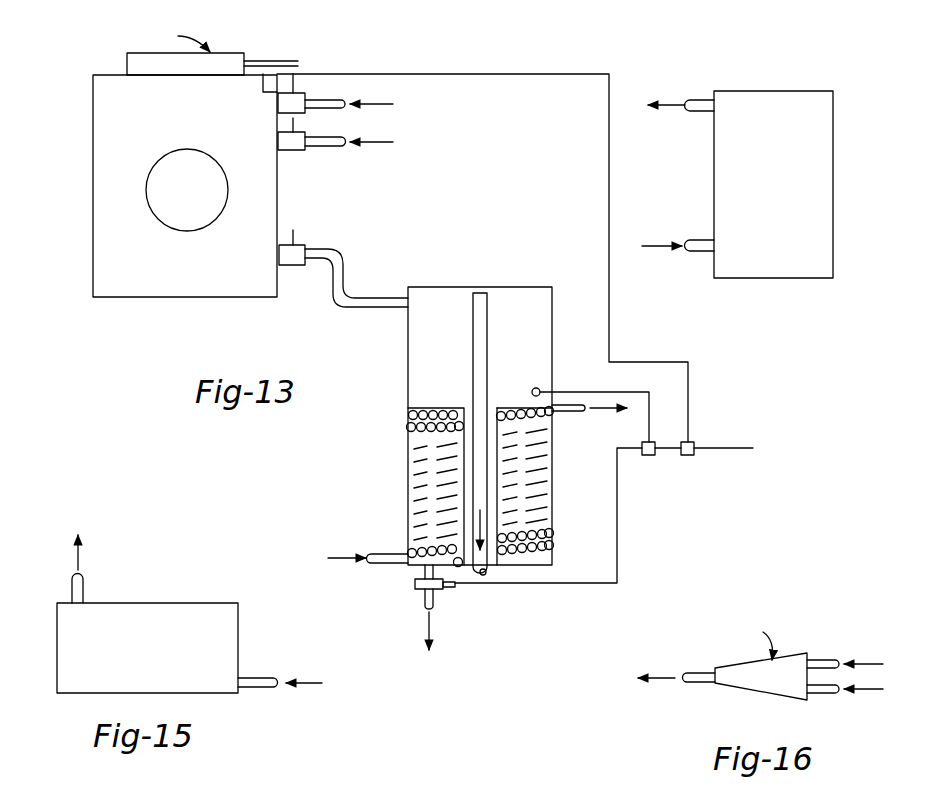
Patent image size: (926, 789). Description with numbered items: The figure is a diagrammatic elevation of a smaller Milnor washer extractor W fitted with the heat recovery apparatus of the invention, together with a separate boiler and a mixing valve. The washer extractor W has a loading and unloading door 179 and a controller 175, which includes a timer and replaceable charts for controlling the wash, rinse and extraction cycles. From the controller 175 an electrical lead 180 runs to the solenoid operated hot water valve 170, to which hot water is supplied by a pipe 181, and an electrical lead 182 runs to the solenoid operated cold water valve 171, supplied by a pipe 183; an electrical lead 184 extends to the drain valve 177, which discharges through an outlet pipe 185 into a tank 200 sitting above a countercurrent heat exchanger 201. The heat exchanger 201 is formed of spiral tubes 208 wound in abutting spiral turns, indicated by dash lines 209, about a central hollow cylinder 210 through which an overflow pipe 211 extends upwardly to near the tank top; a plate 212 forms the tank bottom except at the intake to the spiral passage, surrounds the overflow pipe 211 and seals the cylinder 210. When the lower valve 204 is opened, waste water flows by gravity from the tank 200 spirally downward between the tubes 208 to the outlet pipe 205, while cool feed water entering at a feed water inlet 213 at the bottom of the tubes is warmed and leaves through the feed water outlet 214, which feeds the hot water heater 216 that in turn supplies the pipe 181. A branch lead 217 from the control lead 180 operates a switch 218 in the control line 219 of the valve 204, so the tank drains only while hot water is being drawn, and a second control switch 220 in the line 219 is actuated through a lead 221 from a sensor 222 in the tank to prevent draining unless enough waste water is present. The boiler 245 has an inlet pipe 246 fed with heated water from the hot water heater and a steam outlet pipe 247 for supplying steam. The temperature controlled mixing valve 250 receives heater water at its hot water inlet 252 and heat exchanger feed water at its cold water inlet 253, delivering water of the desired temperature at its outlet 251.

In FIG. 13, the controller 175 is at (127, 63).
In FIG. 13, the washer extractor W is at (158, 300).
In FIG. 13, the loading and unloading door 179 is at (180, 158).
In FIG. 13, the electrical lead 180 is at (263, 90).
In FIG. 13, the hot water valve 170 is at (290, 105).
In FIG. 13, the cold water valve 171 is at (292, 140).
In FIG. 13, the pipe 181 is at (320, 104).
In FIG. 13, the electrical lead 182 is at (289, 60).
In FIG. 13, the pipe 183 is at (325, 146).
In FIG. 13, the electrical lead 184 is at (298, 68).
In FIG. 13, the outlet pipe 185 is at (350, 272).
In FIG. 13, the drain valve 177 is at (296, 265).
In FIG. 13, the tank 200 is at (408, 350).
In FIG. 13, the heat exchanger 201 is at (408, 455).
In FIG. 13, the spiral tubes 208 is at (409, 427).
In FIG. 13, the dash lines 209 is at (422, 506).
In FIG. 13, the central hollow cylinder 210 is at (502, 410).
In FIG. 13, the overflow pipe 211 is at (485, 312).
In FIG. 13, the plate 212 is at (447, 410).
In FIG. 13, the feed water inlet 213 is at (380, 563).
In FIG. 13, the feed water outlet 214 is at (575, 412).
In FIG. 13, the hot water heater 216 is at (833, 118).
In FIG. 13, the branch lead 217 is at (437, 74).
In FIG. 13, the switch 218 is at (690, 455).
In FIG. 13, the control line 219 is at (745, 448).
In FIG. 13, the second control switch 220 is at (650, 455).
In FIG. 13, the lead 221 is at (598, 392).
In FIG. 13, the sensor 222 is at (538, 388).
In FIG. 13, the valve 204 is at (416, 586).
In FIG. 13, the outlet pipe 205 is at (434, 597).
In FIG. 15, the boiler 245 is at (238, 636).
In FIG. 15, the inlet pipe 246 is at (262, 688).
In FIG. 15, the steam outlet pipe 247 is at (83, 585).
In FIG. 16, the mixing valve 250 is at (760, 692).
In FIG. 16, the outlet 251 is at (698, 675).
In FIG. 16, the hot water inlet 252 is at (820, 660).
In FIG. 16, the cold water inlet 253 is at (820, 694).